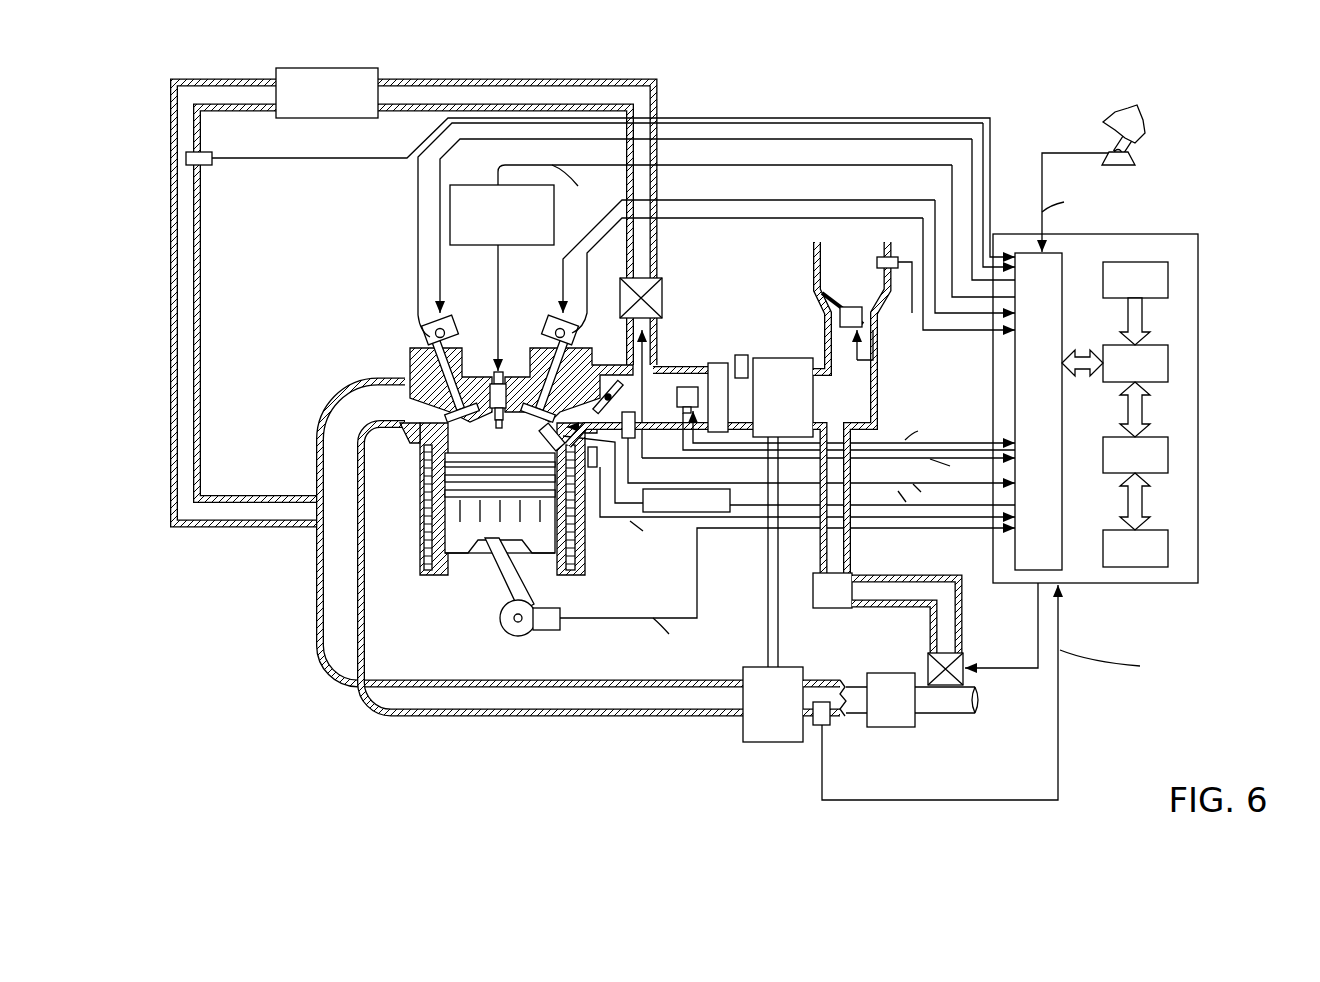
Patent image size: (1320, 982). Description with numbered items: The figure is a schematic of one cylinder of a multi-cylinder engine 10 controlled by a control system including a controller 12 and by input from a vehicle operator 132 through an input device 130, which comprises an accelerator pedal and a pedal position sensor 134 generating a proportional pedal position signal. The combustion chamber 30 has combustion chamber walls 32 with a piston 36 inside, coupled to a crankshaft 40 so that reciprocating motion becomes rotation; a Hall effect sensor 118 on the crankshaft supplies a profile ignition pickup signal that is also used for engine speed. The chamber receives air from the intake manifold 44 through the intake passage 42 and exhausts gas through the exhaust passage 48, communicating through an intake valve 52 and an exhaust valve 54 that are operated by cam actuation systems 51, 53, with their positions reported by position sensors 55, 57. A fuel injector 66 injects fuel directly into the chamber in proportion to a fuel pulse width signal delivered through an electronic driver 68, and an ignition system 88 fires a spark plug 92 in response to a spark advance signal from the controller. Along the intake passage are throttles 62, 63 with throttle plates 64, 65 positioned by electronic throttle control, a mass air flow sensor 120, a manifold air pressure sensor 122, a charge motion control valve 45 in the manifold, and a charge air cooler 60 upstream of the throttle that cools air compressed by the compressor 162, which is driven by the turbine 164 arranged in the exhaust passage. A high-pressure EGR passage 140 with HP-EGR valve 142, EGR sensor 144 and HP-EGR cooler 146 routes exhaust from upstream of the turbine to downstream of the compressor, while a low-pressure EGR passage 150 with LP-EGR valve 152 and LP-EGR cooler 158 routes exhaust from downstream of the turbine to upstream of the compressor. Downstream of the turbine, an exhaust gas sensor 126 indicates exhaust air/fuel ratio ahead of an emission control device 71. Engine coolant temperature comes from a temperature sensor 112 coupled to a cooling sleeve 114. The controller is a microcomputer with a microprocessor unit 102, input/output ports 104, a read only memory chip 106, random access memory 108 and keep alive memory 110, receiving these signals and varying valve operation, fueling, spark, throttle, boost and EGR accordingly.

The engine 10 is at (350, 307).
The controller 12 is at (1137, 396).
The combustion chamber 30 is at (421, 536).
The combustion chamber walls 32 is at (440, 578).
The piston 36 is at (487, 530).
The crankshaft 40 is at (505, 634).
The intake passage 42 is at (839, 283).
The intake manifold 44 is at (646, 416).
The charge motion control valve 45 is at (610, 393).
The exhaust passage 48 is at (371, 416).
The cam actuation system 51 is at (556, 318).
The intake valve 52 is at (549, 406).
The cam actuation system 53 is at (450, 318).
The exhaust valve 54 is at (432, 397).
The position sensor 55 is at (577, 345).
The position sensor 57 is at (428, 345).
The charge air cooler 60 is at (715, 363).
The throttle 62 is at (689, 386).
The throttle 63 is at (824, 298).
The throttle plate 64 is at (674, 386).
The throttle plate 65 is at (840, 316).
The fuel injector 66 is at (545, 439).
The electronic driver 68 is at (731, 493).
The emission control device 71 is at (880, 711).
The ignition system 88 is at (458, 185).
The spark plug 92 is at (503, 372).
The microprocessor unit 102 is at (1168, 366).
The input/output ports 104 is at (1064, 262).
The read only memory chip 106 is at (1168, 280).
The random access memory 108 is at (1168, 457).
The keep alive memory 110 is at (1168, 548).
The temperature sensor 112 is at (596, 470).
The cooling sleeve 114 is at (584, 547).
The Hall effect sensor 118 is at (556, 632).
The mass air flow sensor 120 is at (895, 257).
The manifold air pressure sensor 122 is at (636, 436).
The exhaust gas sensor 126 is at (830, 723).
The input device 130 is at (1100, 132).
The vehicle operator 132 is at (1147, 116).
The pedal position sensor 134 is at (1135, 155).
The high-pressure EGR passage 140 is at (567, 83).
The HP-EGR valve 142 is at (662, 300).
The EGR sensor 144 is at (205, 165).
The HP-EGR cooler 146 is at (312, 104).
The low-pressure EGR passage 150 is at (928, 664).
The LP-EGR valve 152 is at (816, 668).
The LP-EGR cooler 158 is at (817, 601).
The compressor 162 is at (768, 408).
The turbine 164 is at (758, 715).